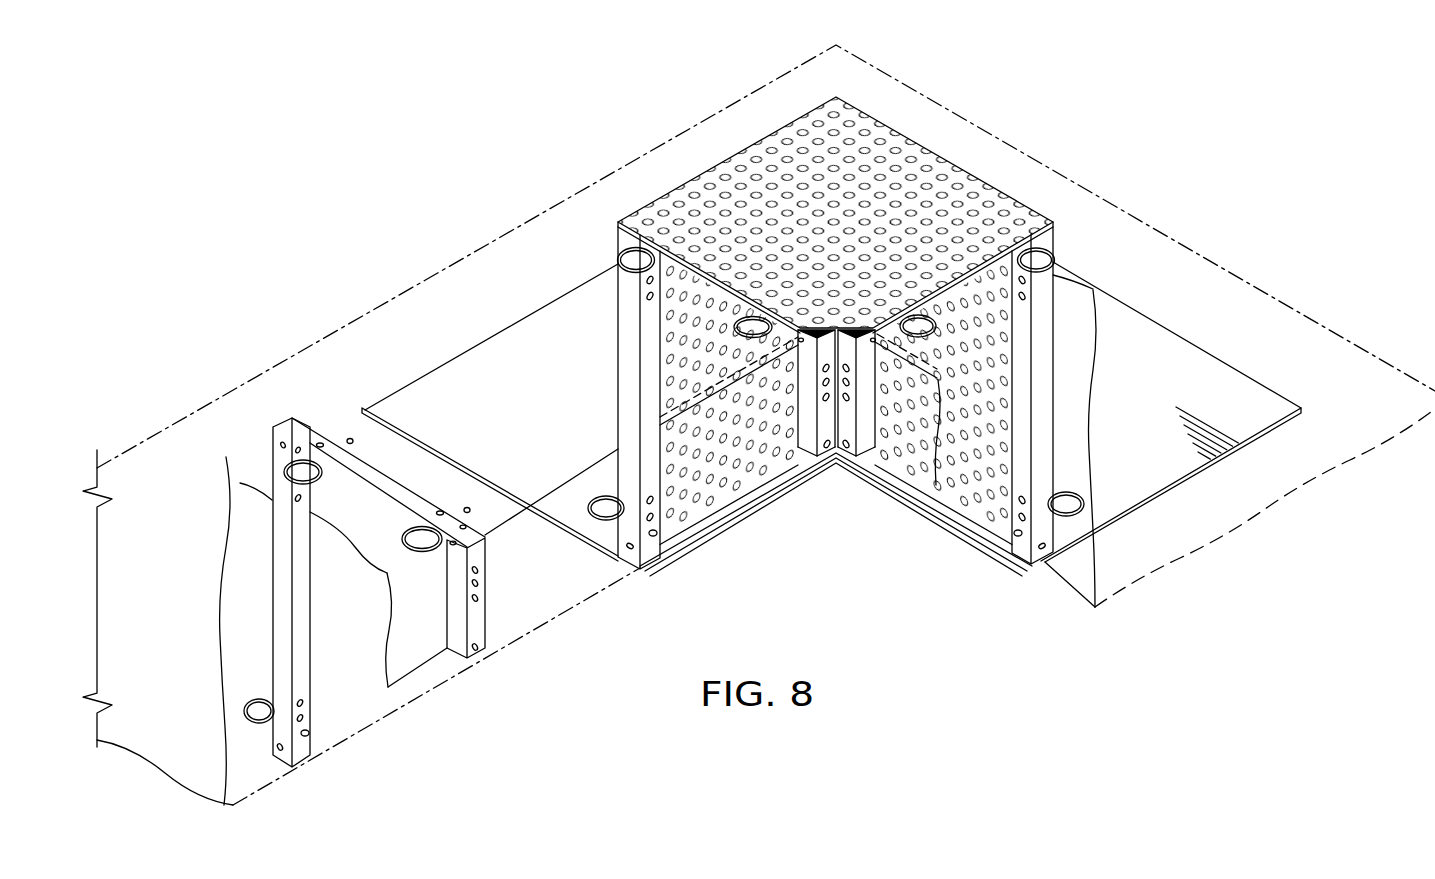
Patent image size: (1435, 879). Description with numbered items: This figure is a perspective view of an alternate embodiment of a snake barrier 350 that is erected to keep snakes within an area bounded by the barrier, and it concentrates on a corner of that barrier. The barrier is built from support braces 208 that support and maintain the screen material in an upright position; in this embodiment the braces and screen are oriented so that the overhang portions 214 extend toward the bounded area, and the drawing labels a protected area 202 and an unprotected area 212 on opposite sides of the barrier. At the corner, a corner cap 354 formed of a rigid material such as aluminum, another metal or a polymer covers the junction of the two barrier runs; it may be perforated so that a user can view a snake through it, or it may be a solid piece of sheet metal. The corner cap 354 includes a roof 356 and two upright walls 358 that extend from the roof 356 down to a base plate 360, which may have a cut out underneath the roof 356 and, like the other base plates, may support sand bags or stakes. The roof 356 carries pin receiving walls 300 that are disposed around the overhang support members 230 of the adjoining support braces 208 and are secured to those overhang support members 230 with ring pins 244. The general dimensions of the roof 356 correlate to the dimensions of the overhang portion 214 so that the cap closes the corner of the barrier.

The protected area 202 is at (323, 228).
The support braces 208 is at (311, 424).
The unprotected area 212 is at (815, 593).
The overhang portion 214 is at (596, 540).
The overhang support members 230 is at (678, 296).
The ring pins 244 is at (927, 338).
The pin receiving walls 300 is at (990, 280).
The snake barrier 350 is at (751, 110).
The corner cap 354 is at (678, 165).
The roof 356 is at (935, 163).
The upright walls 358 is at (997, 509).
The base plate 360 is at (1242, 384).